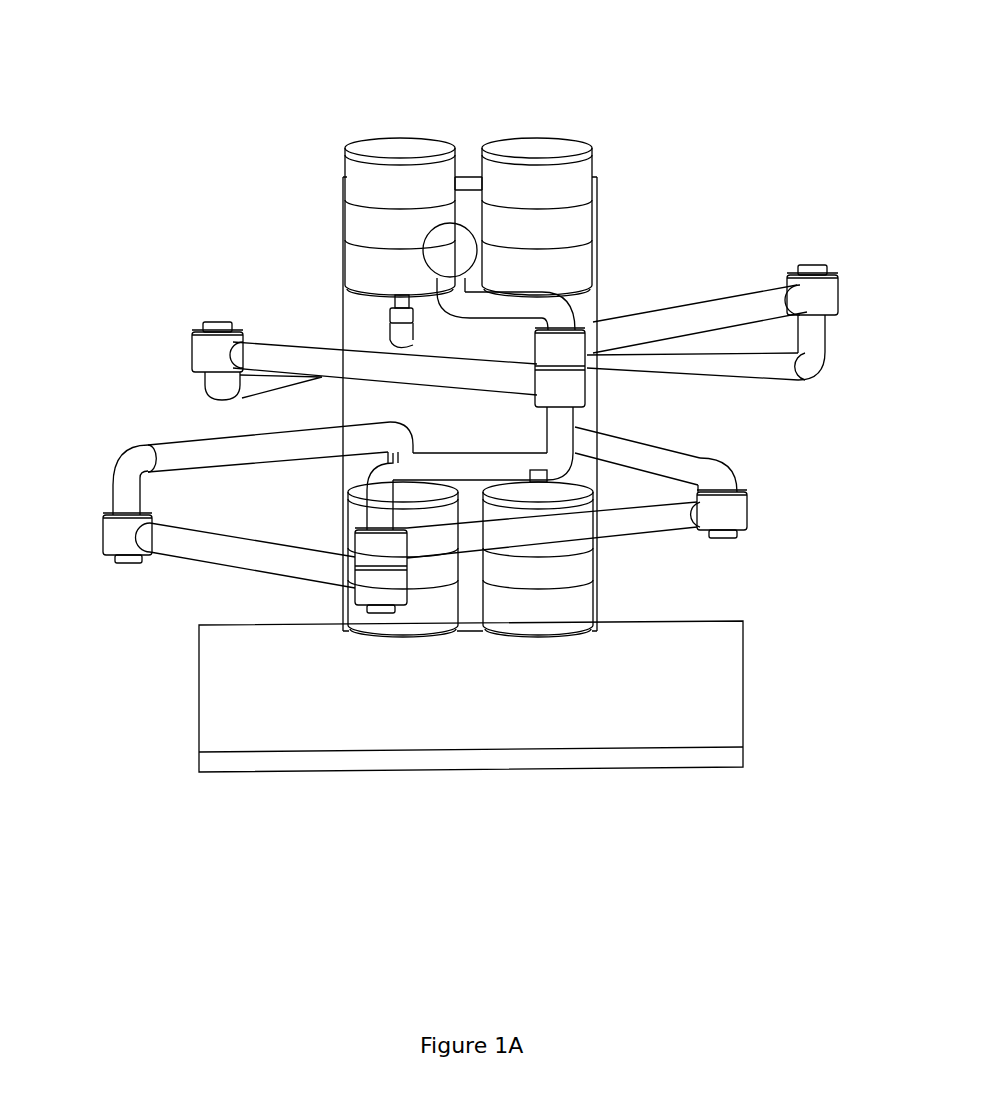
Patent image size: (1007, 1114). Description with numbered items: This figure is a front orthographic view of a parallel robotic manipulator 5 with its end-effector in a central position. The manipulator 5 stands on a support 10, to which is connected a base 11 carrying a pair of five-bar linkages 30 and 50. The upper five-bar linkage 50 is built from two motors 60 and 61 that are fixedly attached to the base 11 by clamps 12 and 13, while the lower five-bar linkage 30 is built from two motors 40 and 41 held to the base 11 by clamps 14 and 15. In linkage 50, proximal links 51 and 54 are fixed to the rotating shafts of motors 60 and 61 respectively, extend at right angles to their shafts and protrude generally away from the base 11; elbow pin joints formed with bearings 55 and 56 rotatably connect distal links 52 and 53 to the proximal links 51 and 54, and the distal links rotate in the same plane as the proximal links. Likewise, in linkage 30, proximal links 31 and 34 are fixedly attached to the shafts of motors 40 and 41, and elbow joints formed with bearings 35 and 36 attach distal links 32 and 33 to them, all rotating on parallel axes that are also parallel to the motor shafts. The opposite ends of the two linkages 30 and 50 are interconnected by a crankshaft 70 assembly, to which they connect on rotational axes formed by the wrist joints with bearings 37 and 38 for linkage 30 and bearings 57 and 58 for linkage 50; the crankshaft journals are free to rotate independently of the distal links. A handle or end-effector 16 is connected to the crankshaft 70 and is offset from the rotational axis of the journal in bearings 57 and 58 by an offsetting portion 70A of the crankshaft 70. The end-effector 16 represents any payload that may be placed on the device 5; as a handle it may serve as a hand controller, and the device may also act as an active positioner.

The robotic manipulator 5 is at (317, 100).
The support 10 is at (730, 657).
The base 11 is at (598, 298).
The clamp 12 is at (353, 223).
The clamp 13 is at (587, 225).
The clamp 14 is at (457, 613).
The clamp 15 is at (585, 563).
The end-effector 16 is at (462, 243).
The five-bar linkage 30 is at (203, 597).
The proximal link 31 is at (188, 455).
The distal link 32 is at (250, 553).
The distal link 33 is at (607, 525).
The proximal link 34 is at (673, 455).
The bearing 35 is at (110, 538).
The bearing 36 is at (738, 510).
The bearing 37 is at (370, 543).
The bearing 38 is at (372, 583).
The motor 40 is at (420, 635).
The motor 41 is at (537, 615).
The five-bar linkage 50 is at (692, 228).
The proximal link 51 is at (378, 345).
The distal link 52 is at (323, 355).
The distal link 53 is at (718, 313).
The proximal link 54 is at (810, 365).
The bearing 55 is at (198, 357).
The bearing 56 is at (838, 290).
The bearing 57 is at (566, 357).
The bearing 58 is at (567, 383).
The motor 60 is at (402, 145).
The motor 61 is at (537, 145).
The crankshaft 70 is at (480, 443).
The offsetting portion 70A is at (522, 300).